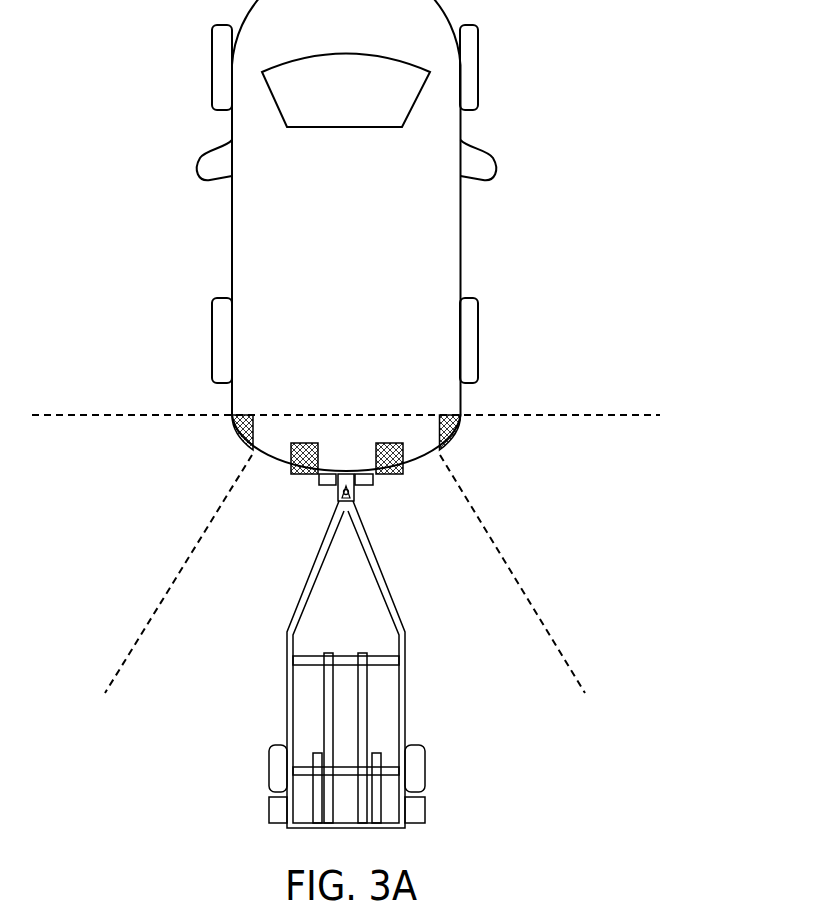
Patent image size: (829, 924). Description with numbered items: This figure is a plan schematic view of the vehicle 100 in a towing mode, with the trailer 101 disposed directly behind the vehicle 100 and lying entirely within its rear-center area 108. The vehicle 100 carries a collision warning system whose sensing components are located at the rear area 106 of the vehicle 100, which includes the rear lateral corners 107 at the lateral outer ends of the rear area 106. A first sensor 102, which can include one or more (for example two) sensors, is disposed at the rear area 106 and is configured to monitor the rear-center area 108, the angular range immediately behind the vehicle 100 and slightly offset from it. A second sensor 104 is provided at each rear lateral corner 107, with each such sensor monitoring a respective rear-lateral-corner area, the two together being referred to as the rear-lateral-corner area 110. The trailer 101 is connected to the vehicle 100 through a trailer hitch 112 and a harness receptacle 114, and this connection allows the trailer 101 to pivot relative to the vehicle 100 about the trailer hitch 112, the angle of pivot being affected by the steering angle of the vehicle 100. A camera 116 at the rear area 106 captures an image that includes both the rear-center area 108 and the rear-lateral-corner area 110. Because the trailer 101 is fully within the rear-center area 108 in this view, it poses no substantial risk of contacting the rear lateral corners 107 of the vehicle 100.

The vehicle 100 is at (442, 220).
The trailer 101 is at (415, 810).
The first sensor 102 is at (307, 443).
The second sensor 104 is at (243, 414).
The rear area 106 is at (504, 407).
The rear lateral corners 107 is at (234, 438).
The rear-center area 108 is at (237, 655).
The rear-lateral-corner area 110 is at (131, 522).
The trailer hitch 112 is at (352, 495).
The harness receptacle 114 is at (363, 487).
The camera 116 is at (326, 487).